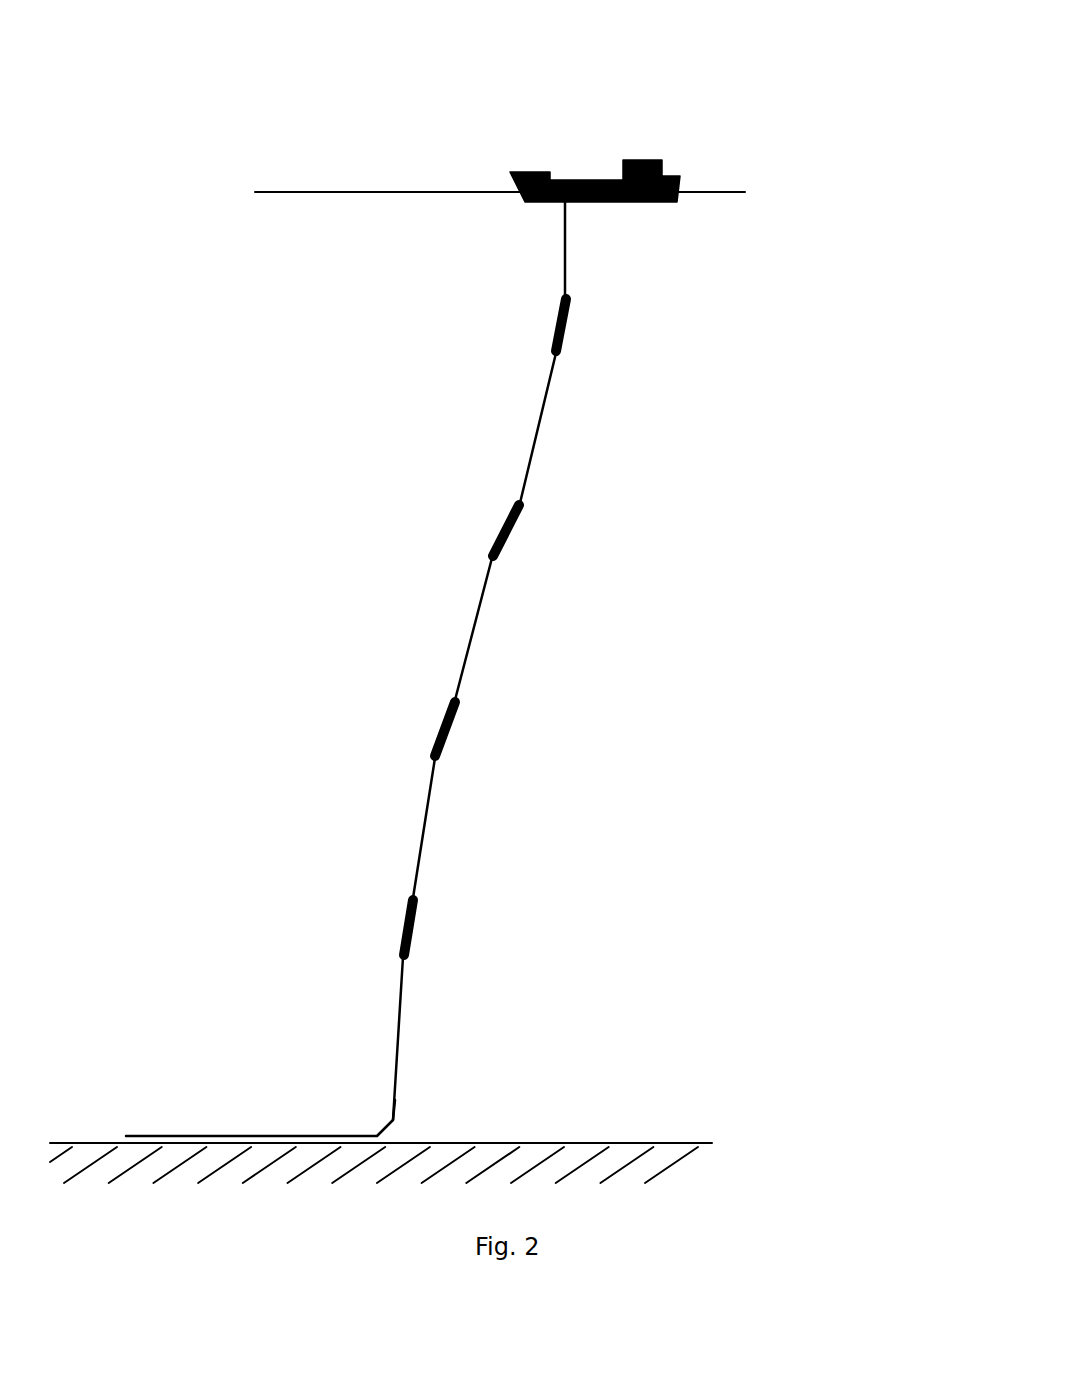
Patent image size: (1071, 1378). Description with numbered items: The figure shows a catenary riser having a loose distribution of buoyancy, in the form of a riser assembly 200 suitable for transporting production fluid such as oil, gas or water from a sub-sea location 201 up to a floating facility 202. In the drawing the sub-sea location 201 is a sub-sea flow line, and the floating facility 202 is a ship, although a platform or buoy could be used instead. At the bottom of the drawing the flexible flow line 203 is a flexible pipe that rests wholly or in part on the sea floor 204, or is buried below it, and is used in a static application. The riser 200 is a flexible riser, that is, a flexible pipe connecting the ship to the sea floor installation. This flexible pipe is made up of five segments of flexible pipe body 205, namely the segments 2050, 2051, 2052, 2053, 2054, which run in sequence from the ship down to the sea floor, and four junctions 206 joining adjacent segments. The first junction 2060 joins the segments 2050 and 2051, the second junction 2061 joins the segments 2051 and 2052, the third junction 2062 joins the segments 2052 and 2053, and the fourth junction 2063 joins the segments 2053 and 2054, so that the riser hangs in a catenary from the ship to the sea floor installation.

The riser assembly 200 is at (642, 631).
The sub-sea location 201 is at (260, 1066).
The floating facility 202 is at (672, 60).
The flexible flow line 203 is at (147, 1137).
The sea floor 204 is at (398, 1216).
The segments of flexible pipe body 205 is at (544, 661).
The first segment of flexible pipe body 2050 is at (565, 245).
The second segment of flexible pipe body 2051 is at (540, 418).
The third segment of flexible pipe body 2052 is at (478, 626).
The fourth segment of flexible pipe body 2053 is at (427, 825).
The fifth segment of flexible pipe body 2054 is at (403, 1028).
The junctions 206 is at (434, 627).
The first junction 2060 is at (556, 318).
The second junction 2061 is at (500, 535).
The third junction 2062 is at (440, 729).
The fourth junction 2063 is at (407, 929).